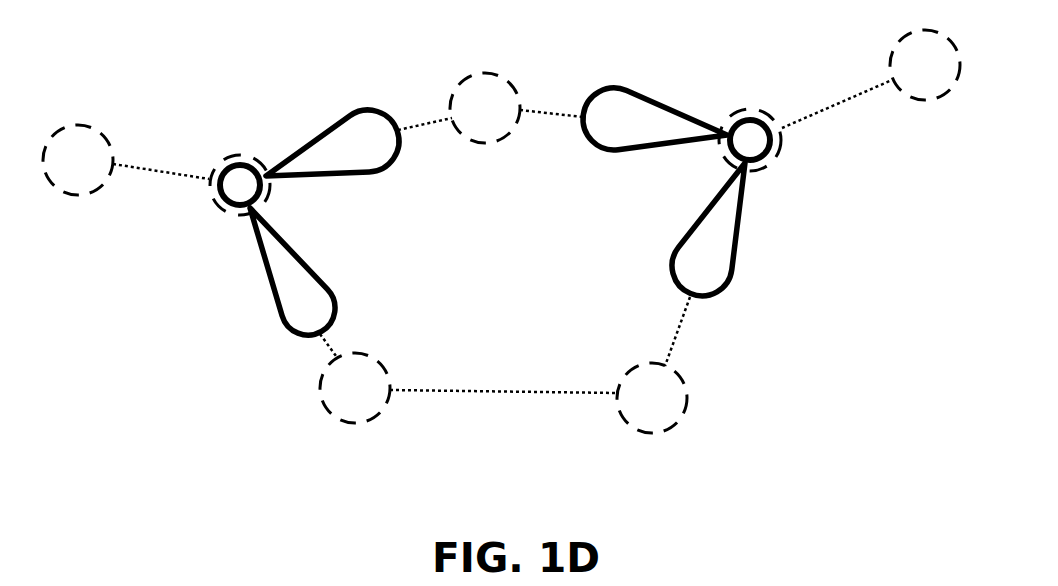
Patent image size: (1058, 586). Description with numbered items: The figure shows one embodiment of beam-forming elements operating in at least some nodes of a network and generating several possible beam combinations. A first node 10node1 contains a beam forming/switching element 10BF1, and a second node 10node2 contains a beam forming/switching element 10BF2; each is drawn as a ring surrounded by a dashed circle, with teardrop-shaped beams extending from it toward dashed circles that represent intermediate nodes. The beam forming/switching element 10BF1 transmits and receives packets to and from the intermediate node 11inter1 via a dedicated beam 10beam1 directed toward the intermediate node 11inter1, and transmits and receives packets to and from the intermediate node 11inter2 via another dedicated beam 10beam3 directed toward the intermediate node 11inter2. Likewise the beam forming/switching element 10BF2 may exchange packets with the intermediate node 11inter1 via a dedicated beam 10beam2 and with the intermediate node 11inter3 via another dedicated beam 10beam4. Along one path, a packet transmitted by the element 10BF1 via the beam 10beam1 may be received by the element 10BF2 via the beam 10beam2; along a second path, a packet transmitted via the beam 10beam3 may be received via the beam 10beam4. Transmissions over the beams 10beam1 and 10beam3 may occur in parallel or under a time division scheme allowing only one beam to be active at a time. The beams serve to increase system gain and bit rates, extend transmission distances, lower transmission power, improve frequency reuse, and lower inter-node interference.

The beam forming/switching element 10BF1 is at (241, 158).
The beam forming/switching element 10BF2 is at (770, 165).
The node 10node1 is at (228, 212).
The node 10node2 is at (776, 76).
The dedicated beam 10beam1 is at (372, 177).
The dedicated beam 10beam2 is at (615, 152).
The dedicated beam 10beam3 is at (336, 300).
The dedicated beam 10beam4 is at (672, 280).
The intermediate node 11inter1 is at (455, 97).
The intermediate node 11inter2 is at (328, 408).
The intermediate node 11inter3 is at (622, 420).